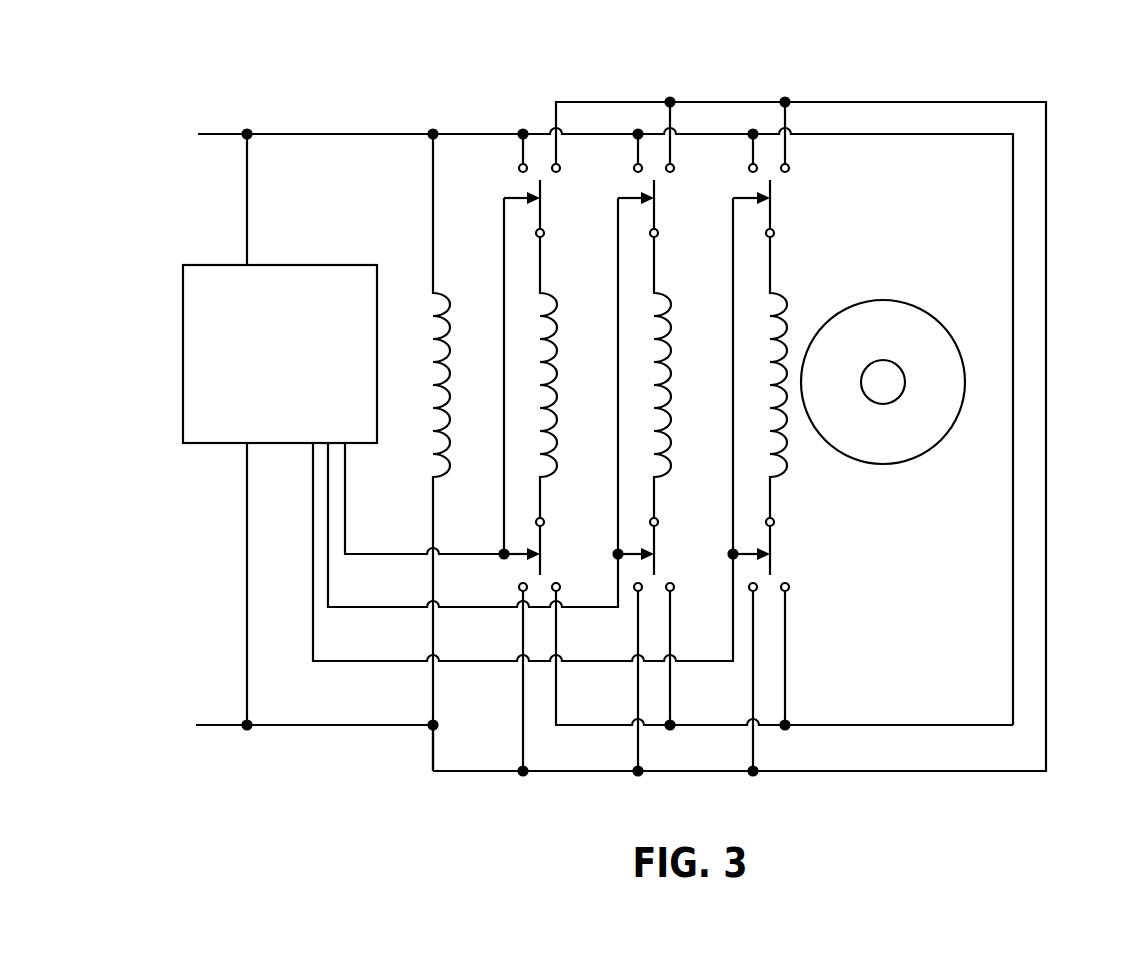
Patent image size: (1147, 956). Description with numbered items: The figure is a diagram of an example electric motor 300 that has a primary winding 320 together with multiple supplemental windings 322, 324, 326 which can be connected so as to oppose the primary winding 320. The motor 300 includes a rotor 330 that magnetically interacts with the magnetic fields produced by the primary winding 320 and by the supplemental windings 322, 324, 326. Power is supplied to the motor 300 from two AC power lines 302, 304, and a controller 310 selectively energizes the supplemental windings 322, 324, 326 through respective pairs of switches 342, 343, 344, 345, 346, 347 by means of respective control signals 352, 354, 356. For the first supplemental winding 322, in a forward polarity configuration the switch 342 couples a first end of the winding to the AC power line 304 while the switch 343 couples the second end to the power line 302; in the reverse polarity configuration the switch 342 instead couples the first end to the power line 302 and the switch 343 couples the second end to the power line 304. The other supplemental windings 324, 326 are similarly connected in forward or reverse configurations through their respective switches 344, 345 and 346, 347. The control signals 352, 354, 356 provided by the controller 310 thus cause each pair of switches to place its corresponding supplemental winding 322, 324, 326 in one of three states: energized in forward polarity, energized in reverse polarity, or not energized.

The electric motor 300 is at (1040, 71).
The AC power line 302 is at (217, 133).
The AC power line 304 is at (216, 727).
The controller 310 is at (285, 265).
The primary winding 320 is at (449, 327).
The first supplemental winding 322 is at (558, 327).
The supplemental winding 324 is at (672, 327).
The supplemental winding 326 is at (788, 327).
The rotor 330 is at (962, 355).
The switch 342 is at (543, 543).
The switch 343 is at (545, 188).
The switch 344 is at (657, 543).
The switch 345 is at (659, 188).
The switch 346 is at (773, 543).
The switch 347 is at (775, 188).
The control signal 352 is at (402, 557).
The control signal 354 is at (402, 609).
The control signal 356 is at (402, 663).